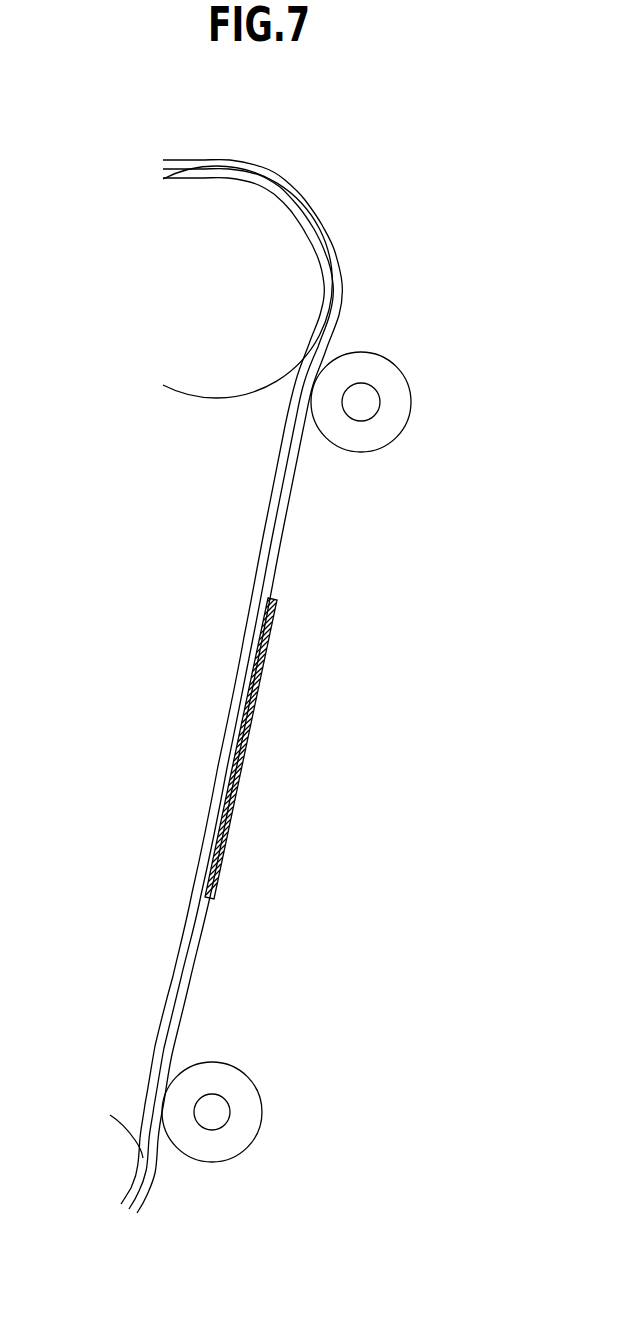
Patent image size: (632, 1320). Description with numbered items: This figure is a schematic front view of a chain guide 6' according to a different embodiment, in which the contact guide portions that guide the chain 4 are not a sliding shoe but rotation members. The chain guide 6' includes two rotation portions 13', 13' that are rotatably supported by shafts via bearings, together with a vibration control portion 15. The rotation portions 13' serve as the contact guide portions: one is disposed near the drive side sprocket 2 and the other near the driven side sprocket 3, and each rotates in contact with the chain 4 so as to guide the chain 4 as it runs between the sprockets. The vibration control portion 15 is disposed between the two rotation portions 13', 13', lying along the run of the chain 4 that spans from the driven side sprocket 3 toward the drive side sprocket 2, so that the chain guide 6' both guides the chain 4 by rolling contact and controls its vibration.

The driven side sprocket 3 is at (242, 197).
The chain 4 is at (280, 474).
The vibration control portion 15 is at (257, 695).
The rotation portion 13' is at (339, 757).
The drive side sprocket 2 is at (118, 1130).
The chain guide 6' is at (451, 604).